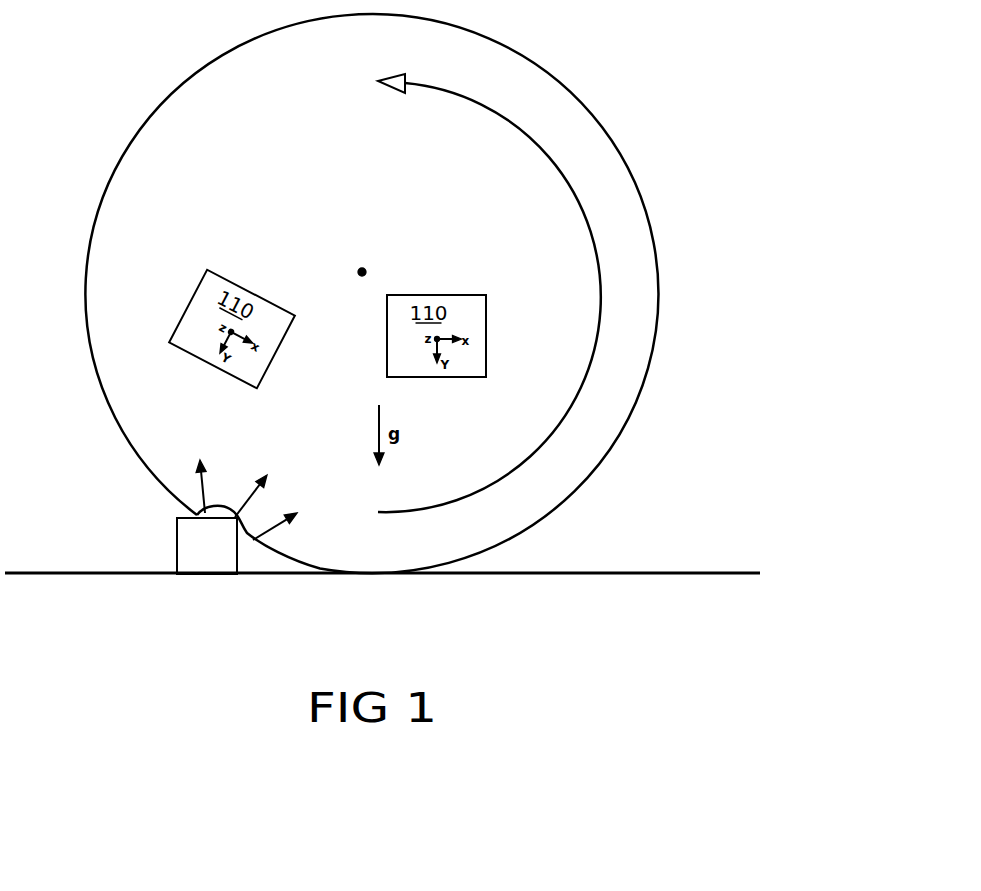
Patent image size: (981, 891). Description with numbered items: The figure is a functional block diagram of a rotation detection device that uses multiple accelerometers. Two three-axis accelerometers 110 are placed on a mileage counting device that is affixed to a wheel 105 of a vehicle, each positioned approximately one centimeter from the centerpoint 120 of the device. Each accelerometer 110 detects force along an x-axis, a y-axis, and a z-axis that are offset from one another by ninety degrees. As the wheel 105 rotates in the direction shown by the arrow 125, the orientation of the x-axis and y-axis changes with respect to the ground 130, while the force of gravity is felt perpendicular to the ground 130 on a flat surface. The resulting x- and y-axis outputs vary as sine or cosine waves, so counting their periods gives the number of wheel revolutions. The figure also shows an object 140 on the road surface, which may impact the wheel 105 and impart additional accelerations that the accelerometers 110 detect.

The wheel 105 is at (158, 92).
The three axis accelerometer 110 is at (327, 329).
The centerpoint 120 is at (362, 272).
The arrow 125 is at (590, 352).
The ground 130 is at (608, 563).
The object on the road surface 140 is at (177, 543).